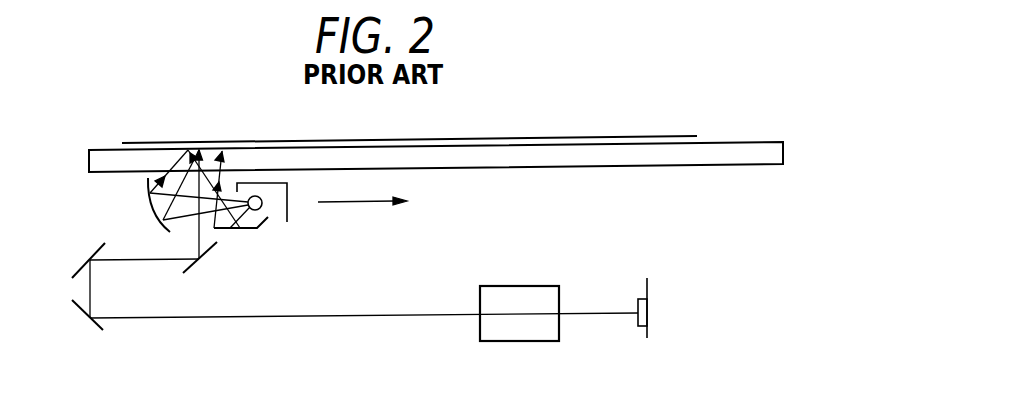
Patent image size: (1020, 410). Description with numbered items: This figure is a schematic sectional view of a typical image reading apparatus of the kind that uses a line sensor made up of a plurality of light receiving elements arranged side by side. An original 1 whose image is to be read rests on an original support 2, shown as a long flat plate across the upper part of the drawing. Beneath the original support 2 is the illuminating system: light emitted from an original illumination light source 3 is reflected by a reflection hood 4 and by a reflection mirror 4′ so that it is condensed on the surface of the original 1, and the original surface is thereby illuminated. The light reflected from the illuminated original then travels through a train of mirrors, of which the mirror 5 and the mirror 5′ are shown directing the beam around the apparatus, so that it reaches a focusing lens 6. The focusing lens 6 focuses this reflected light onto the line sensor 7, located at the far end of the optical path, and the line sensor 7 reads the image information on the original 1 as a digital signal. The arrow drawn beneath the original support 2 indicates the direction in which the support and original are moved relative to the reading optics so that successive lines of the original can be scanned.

The original 1 is at (287, 143).
The original support 2 is at (753, 148).
The original illumination light source 3 is at (260, 198).
The reflection hood 4 is at (262, 222).
The reflection mirror 4′ is at (148, 208).
The mirror 5 is at (205, 250).
The mirror 5′ is at (87, 252).
The focusing lens 6 is at (548, 287).
The line sensor 7 is at (647, 293).